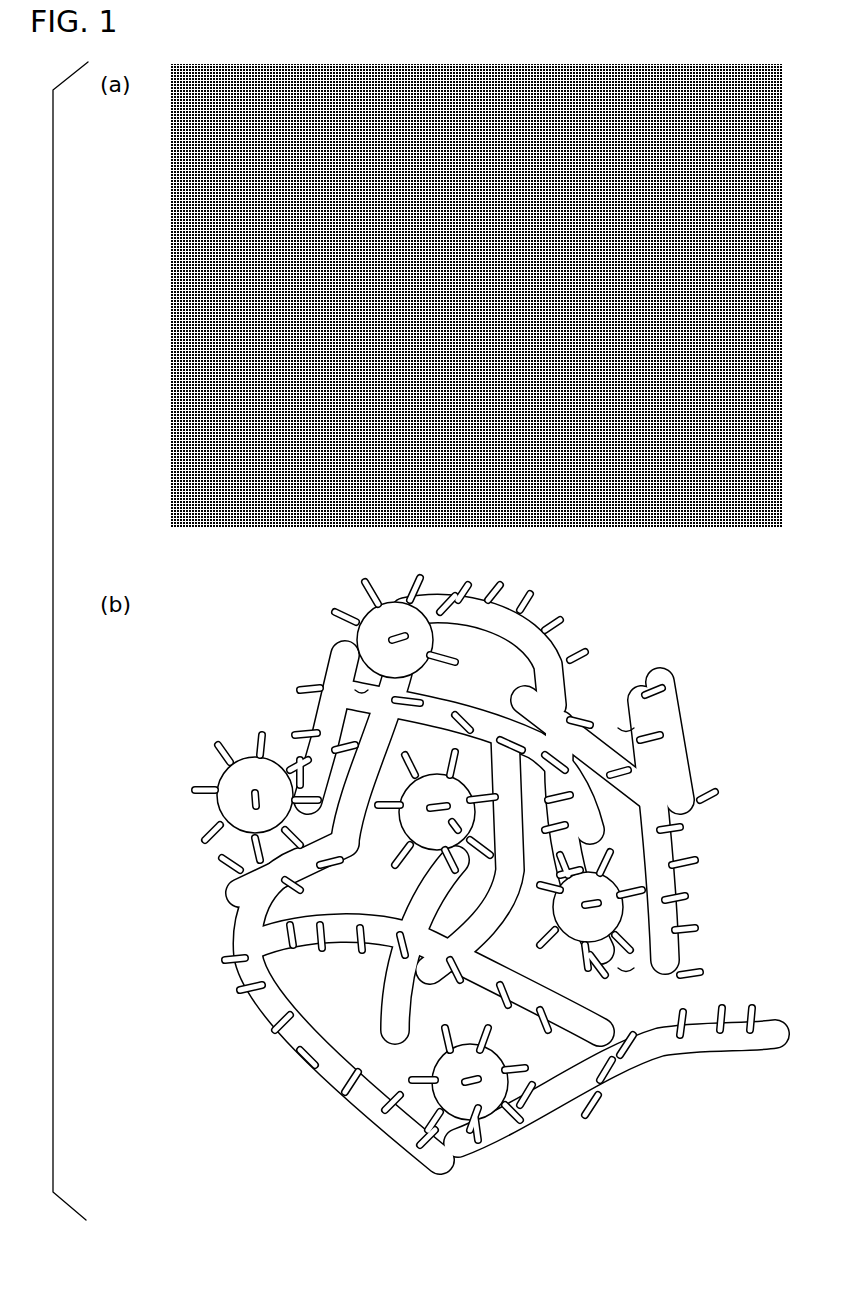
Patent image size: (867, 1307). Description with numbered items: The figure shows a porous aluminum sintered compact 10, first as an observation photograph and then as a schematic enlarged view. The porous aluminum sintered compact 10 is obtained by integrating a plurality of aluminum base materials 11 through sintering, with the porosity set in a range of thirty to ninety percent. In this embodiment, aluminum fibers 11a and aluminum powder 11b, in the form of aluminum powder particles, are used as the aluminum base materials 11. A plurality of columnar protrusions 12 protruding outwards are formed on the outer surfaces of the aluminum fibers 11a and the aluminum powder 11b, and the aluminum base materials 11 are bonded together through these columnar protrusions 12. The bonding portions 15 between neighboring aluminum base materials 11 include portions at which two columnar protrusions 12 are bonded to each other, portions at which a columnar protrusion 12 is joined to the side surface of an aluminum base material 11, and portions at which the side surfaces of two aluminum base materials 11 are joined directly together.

The porous aluminum sintered compact 10 is at (475, 880).
The aluminum base materials 11 is at (487, 851).
The aluminum fibers 11a is at (332, 665).
The aluminum powder 11b is at (404, 610).
The columnar protrusions 12 is at (222, 774).
The bonding portions 15 is at (356, 694).